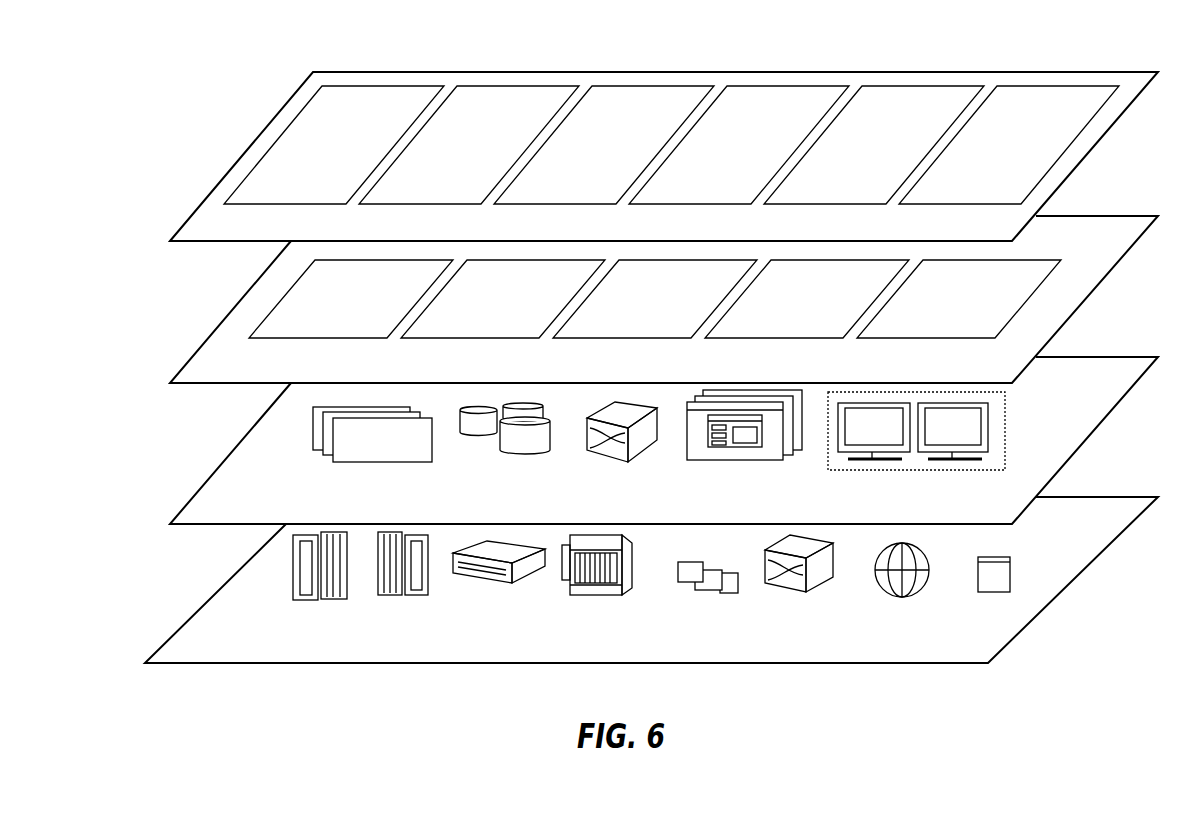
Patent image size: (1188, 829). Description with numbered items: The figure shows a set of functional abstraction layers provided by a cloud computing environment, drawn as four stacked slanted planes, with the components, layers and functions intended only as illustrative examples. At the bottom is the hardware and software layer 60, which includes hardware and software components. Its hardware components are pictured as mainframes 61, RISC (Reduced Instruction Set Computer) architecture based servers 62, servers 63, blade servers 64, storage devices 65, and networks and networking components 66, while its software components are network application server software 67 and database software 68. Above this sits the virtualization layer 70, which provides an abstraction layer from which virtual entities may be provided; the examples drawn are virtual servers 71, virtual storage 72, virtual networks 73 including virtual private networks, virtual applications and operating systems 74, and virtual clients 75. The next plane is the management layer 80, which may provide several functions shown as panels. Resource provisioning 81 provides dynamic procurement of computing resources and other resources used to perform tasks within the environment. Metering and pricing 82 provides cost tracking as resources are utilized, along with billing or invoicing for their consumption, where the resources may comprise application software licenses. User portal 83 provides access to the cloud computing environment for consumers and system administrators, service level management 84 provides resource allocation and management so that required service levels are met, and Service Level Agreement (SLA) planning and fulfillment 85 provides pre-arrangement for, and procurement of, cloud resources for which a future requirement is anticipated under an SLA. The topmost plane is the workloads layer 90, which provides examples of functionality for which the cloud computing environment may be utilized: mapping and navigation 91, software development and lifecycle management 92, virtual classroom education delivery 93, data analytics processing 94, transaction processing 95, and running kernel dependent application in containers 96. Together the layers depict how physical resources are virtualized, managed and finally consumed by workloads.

The hardware and software layer 60 is at (222, 664).
The mainframes 61 is at (322, 600).
The RISC architecture based servers 62 is at (416, 596).
The servers 63 is at (500, 583).
The blade servers 64 is at (600, 595).
The storage devices 65 is at (700, 590).
The networks and networking components 66 is at (800, 592).
The network application server software 67 is at (903, 597).
The database software 68 is at (998, 592).
The virtualization layer 70 is at (222, 525).
The virtual servers 71 is at (387, 462).
The virtual storage 72 is at (530, 452).
The virtual networks 73 is at (630, 460).
The virtual applications and operating systems 74 is at (740, 460).
The virtual clients 75 is at (921, 470).
The management layer 80 is at (222, 384).
The resource provisioning 81 is at (351, 299).
The metering and pricing 82 is at (503, 299).
The user portal 83 is at (655, 299).
The service level management 84 is at (807, 299).
The Service Level Agreement (SLA) planning and fulfillment 85 is at (959, 299).
The workloads layer 90 is at (222, 242).
The mapping and navigation 91 is at (334, 145).
The software development and lifecycle management 92 is at (469, 145).
The virtual classroom education delivery 93 is at (604, 145).
The data analytics processing 94 is at (739, 145).
The transaction processing 95 is at (874, 145).
The running kernel dependent application in containers 96 is at (1009, 145).